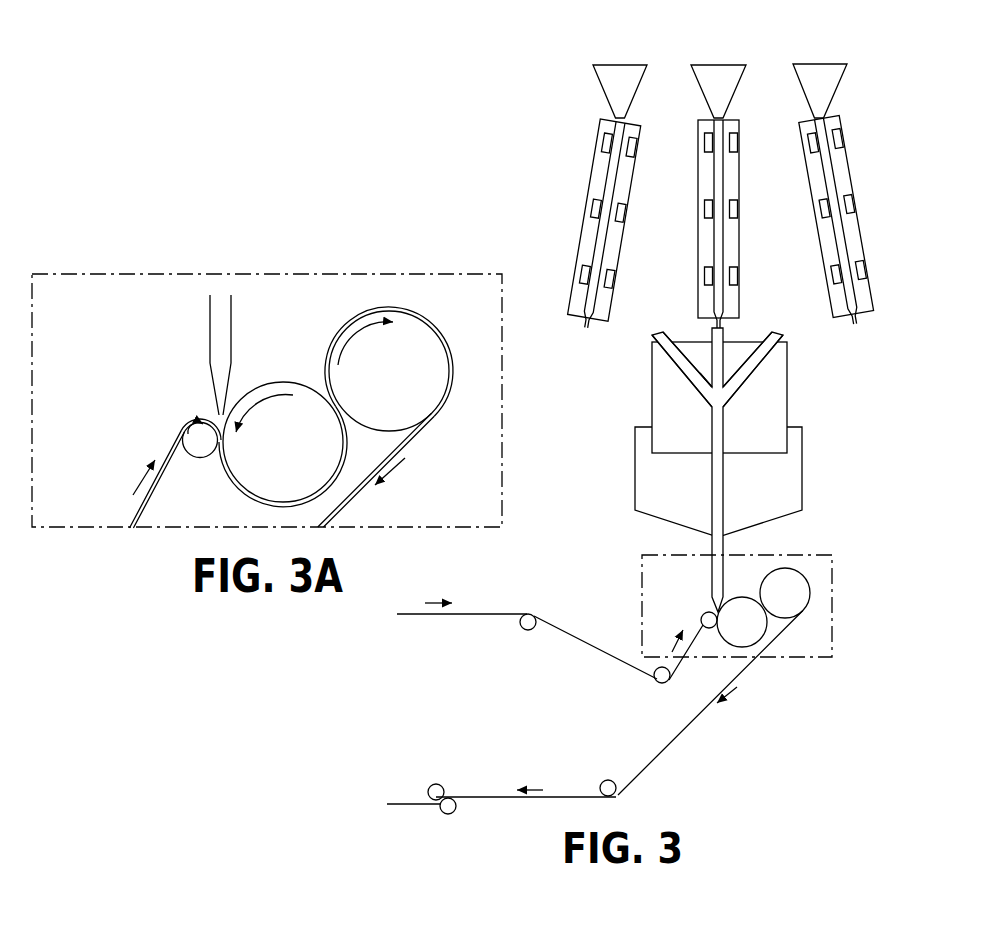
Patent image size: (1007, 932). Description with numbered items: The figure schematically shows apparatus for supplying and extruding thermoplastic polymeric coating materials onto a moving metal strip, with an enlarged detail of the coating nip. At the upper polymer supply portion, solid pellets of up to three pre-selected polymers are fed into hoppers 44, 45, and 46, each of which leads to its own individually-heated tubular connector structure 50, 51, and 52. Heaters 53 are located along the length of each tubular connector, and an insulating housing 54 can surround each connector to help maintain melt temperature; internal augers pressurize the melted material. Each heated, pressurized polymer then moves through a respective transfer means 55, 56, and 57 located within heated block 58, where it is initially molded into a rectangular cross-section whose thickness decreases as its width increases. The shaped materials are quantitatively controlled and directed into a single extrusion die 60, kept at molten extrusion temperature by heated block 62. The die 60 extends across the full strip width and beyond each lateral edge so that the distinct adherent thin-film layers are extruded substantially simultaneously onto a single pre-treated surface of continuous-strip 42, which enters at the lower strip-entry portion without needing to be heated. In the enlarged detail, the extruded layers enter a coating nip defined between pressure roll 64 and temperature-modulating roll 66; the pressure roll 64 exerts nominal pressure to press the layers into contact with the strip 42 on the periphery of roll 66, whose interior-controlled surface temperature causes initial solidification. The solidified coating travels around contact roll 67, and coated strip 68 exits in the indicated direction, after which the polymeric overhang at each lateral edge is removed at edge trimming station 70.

In FIG. 3, the continuous-strip 42 is at (497, 613).
In FIG. 3A, the continuous-strip 42 is at (153, 490).
In FIG. 3, the hopper 44 is at (620, 63).
In FIG. 3, the hopper 45 is at (718, 63).
In FIG. 3, the hopper 46 is at (820, 60).
In FIG. 3, the individually-heated connector structure 50 is at (635, 250).
In FIG. 3, the individually-heated connector structure 51 is at (695, 168).
In FIG. 3, the individually-heated connector structure 52 is at (818, 178).
In FIG. 3, the heater 53 is at (608, 152).
In FIG. 3, the insulating housing 54 is at (825, 217).
In FIG. 3, the transfer means 55 is at (678, 369).
In FIG. 3, the transfer means 56 is at (709, 353).
In FIG. 3, the transfer means 57 is at (762, 363).
In FIG. 3, the heated block 58 is at (775, 397).
In FIG. 3, the extrusion die 60 is at (713, 437).
In FIG. 3A, the extrusion die 60 is at (213, 388).
In FIG. 3, the heated block 62 is at (763, 512).
In FIG. 3A, the pressure roll 64 is at (202, 438).
In FIG. 3A, the temperature-modulating roll 66 is at (283, 444).
In FIG. 3A, the contact roll 67 is at (389, 369).
In FIG. 3, the coated strip 68 is at (670, 742).
In FIG. 3A, the coated strip 68 is at (347, 497).
In FIG. 3, the edge trimming station 70 is at (445, 795).